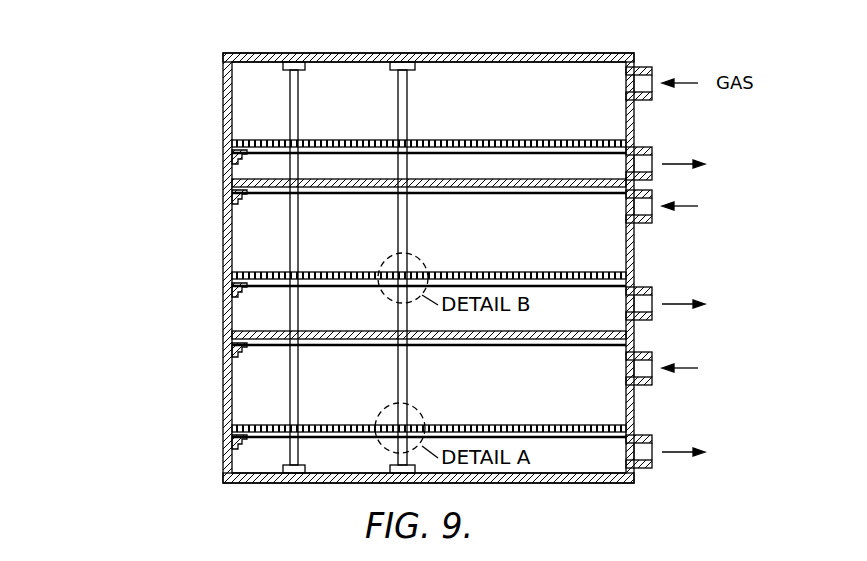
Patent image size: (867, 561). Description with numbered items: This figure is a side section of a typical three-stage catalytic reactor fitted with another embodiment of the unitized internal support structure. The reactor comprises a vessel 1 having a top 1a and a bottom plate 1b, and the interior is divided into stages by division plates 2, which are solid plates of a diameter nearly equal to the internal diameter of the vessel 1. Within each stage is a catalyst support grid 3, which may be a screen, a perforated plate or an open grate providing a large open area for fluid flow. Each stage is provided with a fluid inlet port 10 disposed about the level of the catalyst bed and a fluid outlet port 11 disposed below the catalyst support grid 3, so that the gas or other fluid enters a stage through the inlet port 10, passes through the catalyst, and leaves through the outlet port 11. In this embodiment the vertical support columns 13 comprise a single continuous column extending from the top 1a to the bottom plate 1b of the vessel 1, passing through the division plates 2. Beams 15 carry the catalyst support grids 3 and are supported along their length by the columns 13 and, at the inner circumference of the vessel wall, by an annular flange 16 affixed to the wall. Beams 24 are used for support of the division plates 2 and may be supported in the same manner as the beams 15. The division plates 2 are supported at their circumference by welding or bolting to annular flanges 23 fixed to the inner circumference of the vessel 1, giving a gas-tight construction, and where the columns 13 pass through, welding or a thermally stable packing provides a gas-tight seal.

The vessel 1 is at (222, 320).
The top 1a is at (335, 53).
The bottom plate 1b is at (362, 473).
The division plates 2 is at (444, 179).
The catalyst support grid 3 is at (489, 141).
The fluid inlet port 10 is at (646, 67).
The fluid outlet port 11 is at (646, 147).
The vertical support columns 13 is at (298, 100).
The beams 15 is at (532, 153).
The annular flange 16 is at (231, 158).
The annular flanges 23 is at (231, 197).
The beams 24 is at (462, 193).